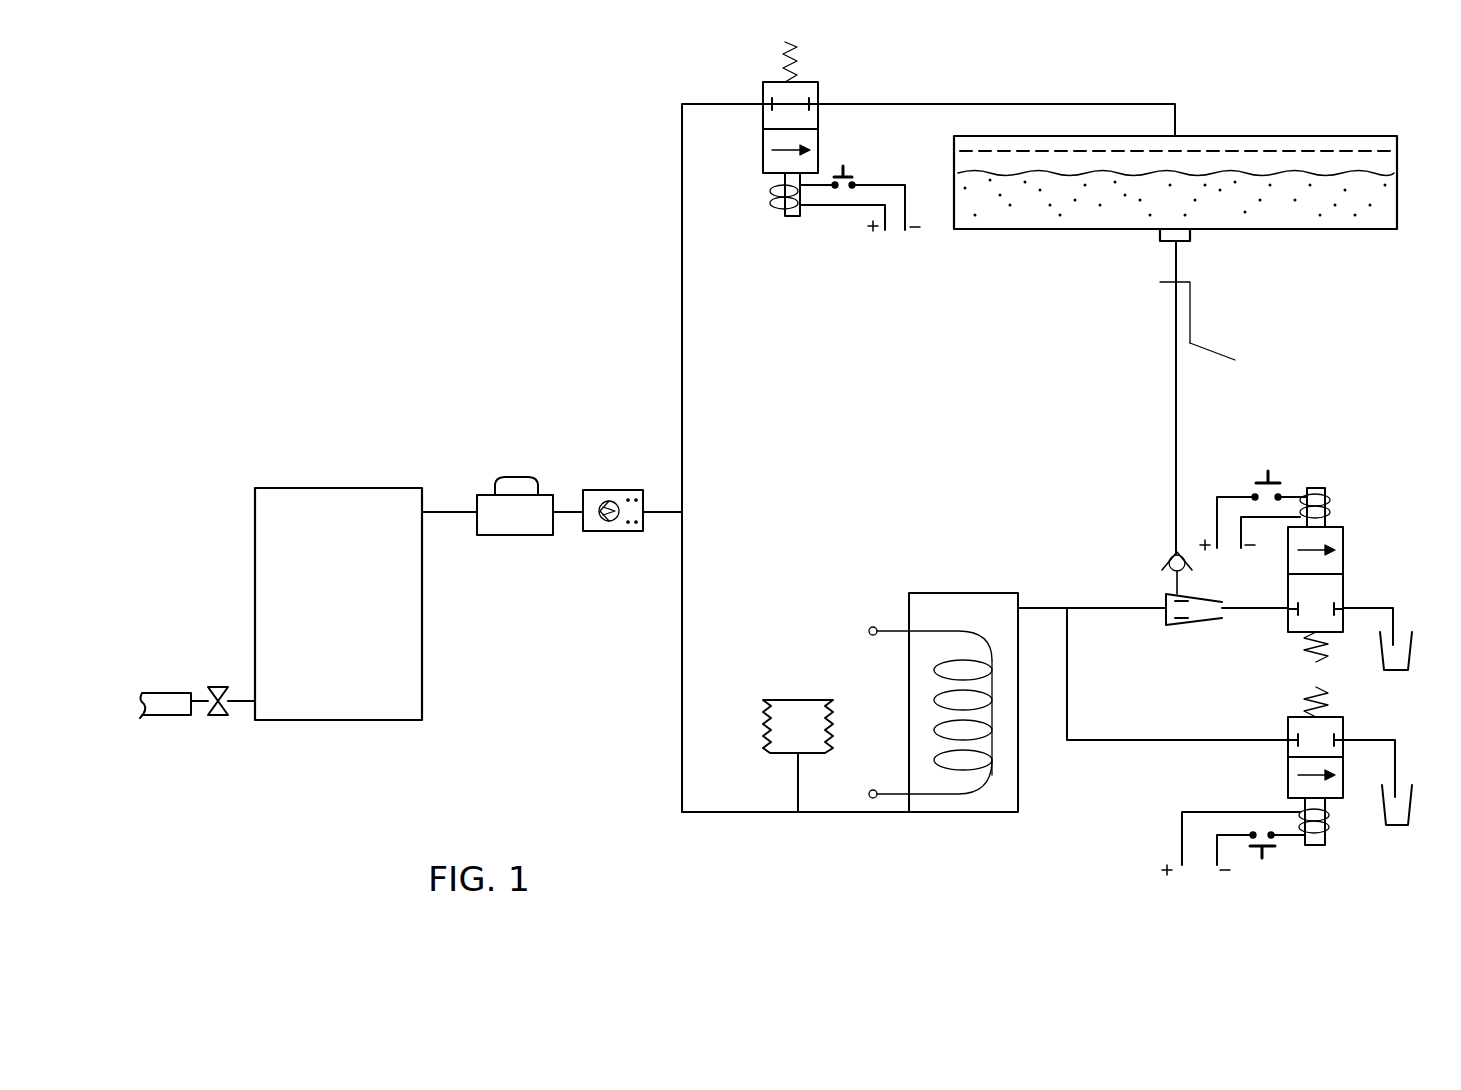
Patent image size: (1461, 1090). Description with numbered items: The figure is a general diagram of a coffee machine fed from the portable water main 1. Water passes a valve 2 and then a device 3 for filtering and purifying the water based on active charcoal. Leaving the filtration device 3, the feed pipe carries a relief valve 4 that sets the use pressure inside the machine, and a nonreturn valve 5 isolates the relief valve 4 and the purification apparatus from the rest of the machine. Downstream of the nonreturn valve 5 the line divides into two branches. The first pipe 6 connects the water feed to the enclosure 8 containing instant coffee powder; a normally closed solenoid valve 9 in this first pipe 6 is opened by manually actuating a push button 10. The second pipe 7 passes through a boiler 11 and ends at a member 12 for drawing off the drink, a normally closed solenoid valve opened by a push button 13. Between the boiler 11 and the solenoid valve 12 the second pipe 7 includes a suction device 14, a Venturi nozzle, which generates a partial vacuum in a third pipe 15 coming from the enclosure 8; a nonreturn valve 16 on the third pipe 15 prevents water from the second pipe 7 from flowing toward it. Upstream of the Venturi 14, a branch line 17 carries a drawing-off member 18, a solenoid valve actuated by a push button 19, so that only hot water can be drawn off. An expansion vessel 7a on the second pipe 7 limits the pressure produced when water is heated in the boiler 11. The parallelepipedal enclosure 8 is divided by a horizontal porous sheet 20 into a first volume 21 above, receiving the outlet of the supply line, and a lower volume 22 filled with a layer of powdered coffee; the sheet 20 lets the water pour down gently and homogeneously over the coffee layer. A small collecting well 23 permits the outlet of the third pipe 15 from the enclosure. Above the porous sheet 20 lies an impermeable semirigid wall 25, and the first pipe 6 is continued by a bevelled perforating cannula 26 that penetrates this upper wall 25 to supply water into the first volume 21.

The portable water main 1 is at (170, 695).
The valve 2 is at (219, 693).
The device for filtering and purifying the water 3 is at (342, 502).
The relief valve 4 is at (505, 530).
The nonreturn valve 5 is at (613, 490).
The first pipe 6 is at (682, 332).
The second pipe 7 is at (684, 670).
The expansion vessel 7a is at (1290, 150).
The enclosure 8 is at (1350, 136).
The solenoid valve 9 is at (763, 86).
The push button 10 is at (846, 172).
The boiler 11 is at (995, 770).
The member for drawing off the drink 12 is at (1343, 562).
The push button 13 is at (1275, 478).
The suction device 14 is at (1190, 620).
The third pipe 15 is at (1176, 432).
The nonreturn valve 16 is at (1169, 556).
The branch line 17 is at (1067, 680).
The drawing-off member 18 is at (1288, 752).
The push button 19 is at (1265, 860).
The horizontal sheet 20 is at (800, 712).
The first volume 21 is at (1212, 145).
The lower volume 22 is at (1388, 200).
The collecting well 23 is at (1160, 241).
The impermeable semirigid wall 25 is at (1160, 285).
The bevelled perforating cannula 26 is at (1190, 310).